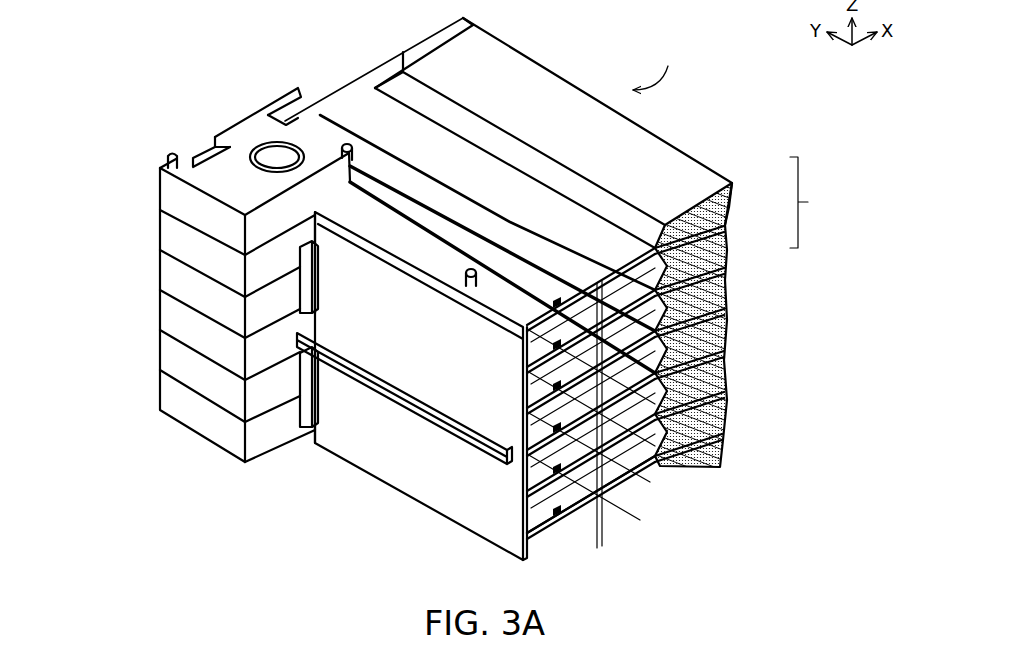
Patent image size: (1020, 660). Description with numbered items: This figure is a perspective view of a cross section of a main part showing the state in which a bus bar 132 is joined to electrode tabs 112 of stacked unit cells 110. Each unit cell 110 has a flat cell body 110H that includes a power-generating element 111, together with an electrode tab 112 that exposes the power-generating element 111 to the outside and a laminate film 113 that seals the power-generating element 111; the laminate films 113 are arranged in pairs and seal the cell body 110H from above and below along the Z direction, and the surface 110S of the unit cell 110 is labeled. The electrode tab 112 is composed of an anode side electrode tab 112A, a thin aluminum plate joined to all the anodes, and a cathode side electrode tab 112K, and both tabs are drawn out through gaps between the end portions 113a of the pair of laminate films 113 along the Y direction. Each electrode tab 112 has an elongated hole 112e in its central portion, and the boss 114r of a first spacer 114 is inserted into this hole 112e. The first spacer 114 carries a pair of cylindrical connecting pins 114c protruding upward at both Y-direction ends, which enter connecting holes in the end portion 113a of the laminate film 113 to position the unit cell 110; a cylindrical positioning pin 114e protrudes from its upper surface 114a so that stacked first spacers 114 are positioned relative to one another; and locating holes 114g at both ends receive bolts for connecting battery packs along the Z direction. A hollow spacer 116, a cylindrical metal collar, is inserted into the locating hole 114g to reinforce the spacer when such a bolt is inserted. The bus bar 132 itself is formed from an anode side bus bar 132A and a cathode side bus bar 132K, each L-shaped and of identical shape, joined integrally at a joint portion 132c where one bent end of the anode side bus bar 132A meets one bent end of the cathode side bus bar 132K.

The unit cell 110 is at (637, 134).
The hood upper surface 110S is at (675, 64).
The cell body 110H is at (743, 299).
The power-generating element 111 is at (729, 207).
The laminate film 113 is at (734, 183).
The end portion of laminate film 113a is at (453, 207).
The electrode tab 112 is at (808, 510).
The cathode side electrode tab 112K is at (680, 400).
The hole 112e is at (473, 288).
The anode side electrode tab 112A is at (620, 473).
The first spacer 114 is at (160, 186).
The upper surface 114a is at (260, 122).
The connecting pin 114c is at (345, 144).
The positioning pin 114e is at (170, 156).
The locating hole 114g is at (223, 143).
The boss 114r is at (473, 269).
The hollow spacer 116 is at (247, 163).
The bus bar 132 is at (90, 523).
The cathode side bus bar 132K is at (357, 303).
The anode side bus bar 132A is at (357, 393).
The joint portion 132c is at (392, 395).